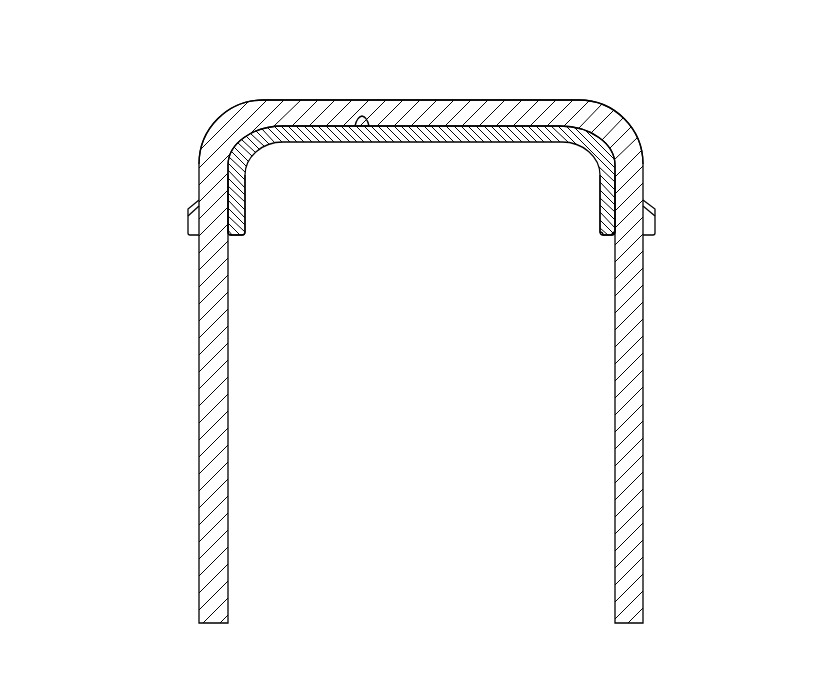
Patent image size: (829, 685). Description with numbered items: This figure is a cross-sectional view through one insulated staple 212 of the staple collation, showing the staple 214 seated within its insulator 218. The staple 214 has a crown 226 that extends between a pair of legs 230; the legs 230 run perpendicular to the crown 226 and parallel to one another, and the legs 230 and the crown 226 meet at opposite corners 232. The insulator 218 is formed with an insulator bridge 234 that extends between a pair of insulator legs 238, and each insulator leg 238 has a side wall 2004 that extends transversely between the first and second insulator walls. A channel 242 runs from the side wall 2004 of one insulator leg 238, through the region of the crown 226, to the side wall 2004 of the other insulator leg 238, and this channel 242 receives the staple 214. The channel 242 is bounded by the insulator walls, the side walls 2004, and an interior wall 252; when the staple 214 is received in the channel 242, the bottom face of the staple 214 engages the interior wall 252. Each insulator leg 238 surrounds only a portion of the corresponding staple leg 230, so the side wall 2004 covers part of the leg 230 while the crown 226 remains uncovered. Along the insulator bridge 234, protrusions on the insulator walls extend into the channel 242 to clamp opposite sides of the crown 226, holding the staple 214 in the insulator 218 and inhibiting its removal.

The insulated staple 212 is at (190, 114).
The staple 214 is at (637, 275).
The leg 230 is at (633, 522).
The corner 232 is at (235, 120).
The crown 226 is at (455, 100).
The channel 242 is at (522, 125).
The insulator bridge 234 is at (457, 143).
The insulator 218 is at (395, 143).
The interior wall 252 is at (358, 127).
The insulator leg 238 is at (247, 167).
The side wall 2004 is at (188, 220).